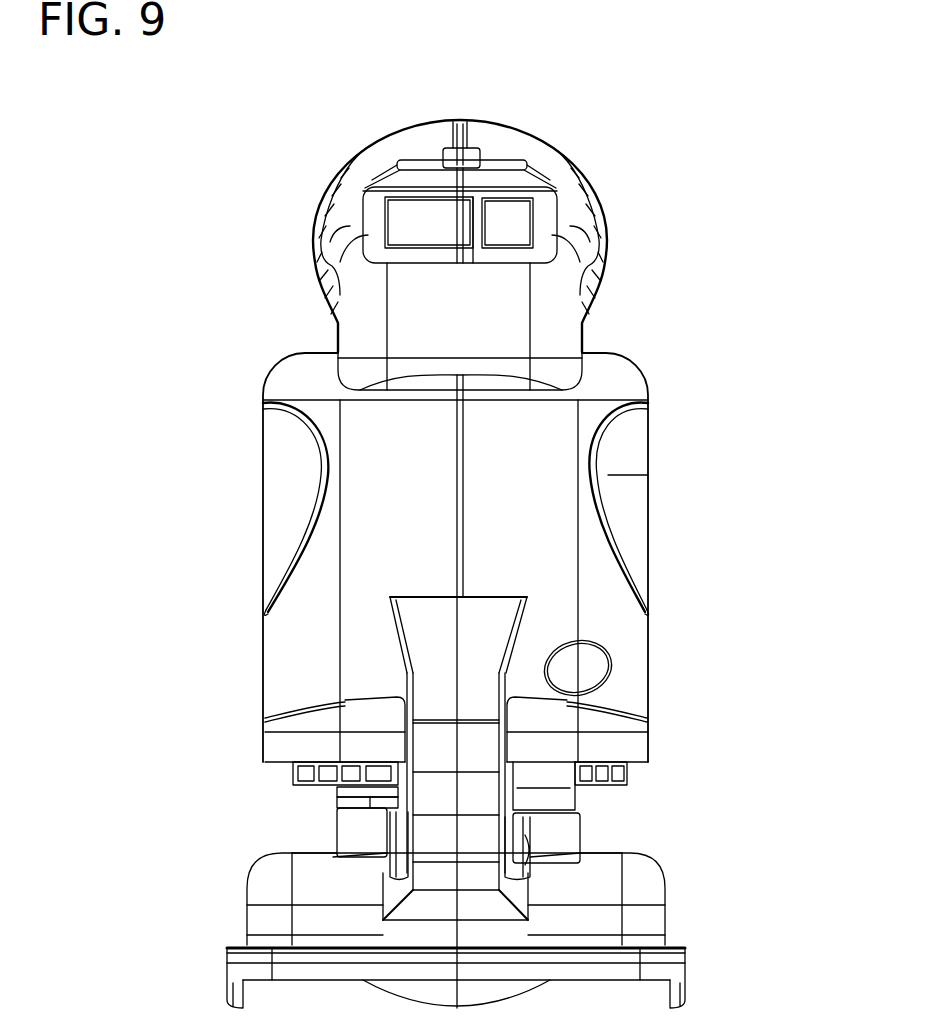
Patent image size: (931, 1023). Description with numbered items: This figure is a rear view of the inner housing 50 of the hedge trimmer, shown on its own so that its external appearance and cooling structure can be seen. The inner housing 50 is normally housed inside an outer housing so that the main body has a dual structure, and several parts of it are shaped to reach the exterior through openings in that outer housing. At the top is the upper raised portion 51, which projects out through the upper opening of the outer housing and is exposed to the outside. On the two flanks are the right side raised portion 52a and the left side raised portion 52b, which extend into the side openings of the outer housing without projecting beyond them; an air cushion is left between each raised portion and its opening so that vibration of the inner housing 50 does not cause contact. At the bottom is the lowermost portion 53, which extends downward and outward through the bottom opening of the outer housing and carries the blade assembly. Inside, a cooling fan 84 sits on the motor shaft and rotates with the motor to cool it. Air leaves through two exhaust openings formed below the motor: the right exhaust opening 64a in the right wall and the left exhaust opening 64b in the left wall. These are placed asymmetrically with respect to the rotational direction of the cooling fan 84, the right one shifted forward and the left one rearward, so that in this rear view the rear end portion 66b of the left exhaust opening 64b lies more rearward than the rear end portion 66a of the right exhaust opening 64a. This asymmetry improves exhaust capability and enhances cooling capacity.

The upper raised portion 51 is at (509, 125).
The left side raised portion 52b is at (262, 478).
The right side raised portion 52a is at (655, 478).
The inner housing 50 is at (295, 620).
The cooling fan 84 is at (332, 765).
The left exhaust opening 64b is at (282, 766).
The right exhaust opening 64a is at (632, 766).
The rear end portion of left exhaust opening 66b is at (330, 792).
The rear end portion of right exhaust opening 66a is at (592, 793).
The lowermost portion 53 is at (227, 972).